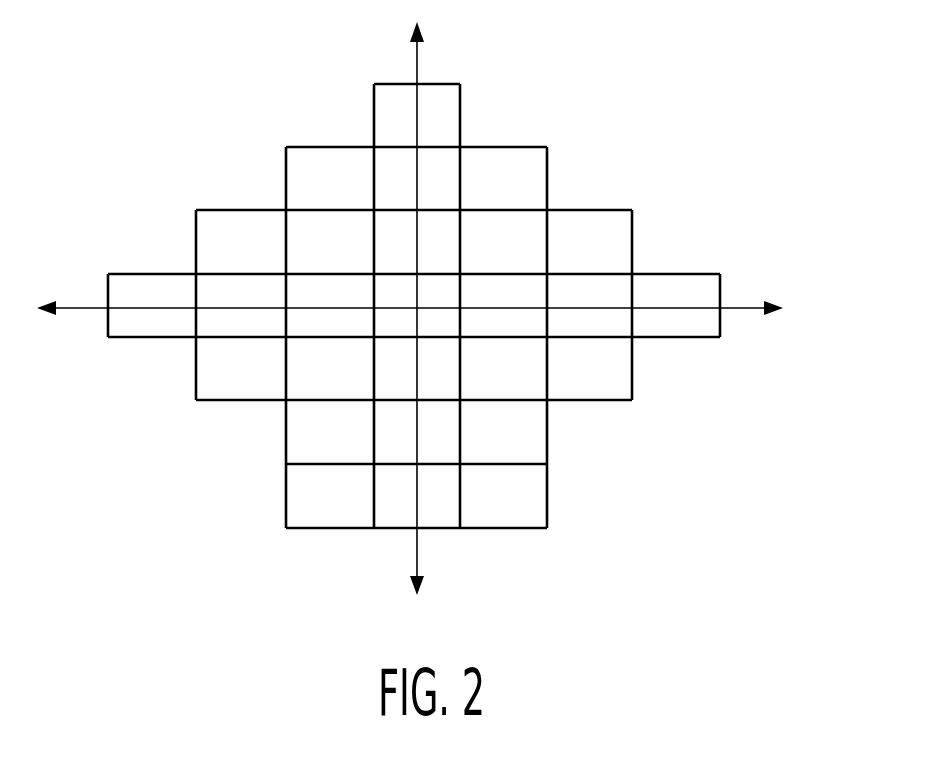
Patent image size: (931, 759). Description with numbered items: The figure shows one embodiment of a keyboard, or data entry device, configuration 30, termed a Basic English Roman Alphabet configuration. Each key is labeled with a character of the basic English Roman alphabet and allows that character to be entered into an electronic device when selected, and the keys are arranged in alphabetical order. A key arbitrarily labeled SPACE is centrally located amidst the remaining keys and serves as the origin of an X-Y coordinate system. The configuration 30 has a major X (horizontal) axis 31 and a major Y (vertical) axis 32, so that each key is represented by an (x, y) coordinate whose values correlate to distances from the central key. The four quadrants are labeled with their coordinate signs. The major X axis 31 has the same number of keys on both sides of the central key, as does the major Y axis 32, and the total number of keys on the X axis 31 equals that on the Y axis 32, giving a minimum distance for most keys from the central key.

The keyboard configuration 30 is at (718, 78).
The major X axis 31 is at (70, 306).
The major Y axis 32 is at (418, 62).